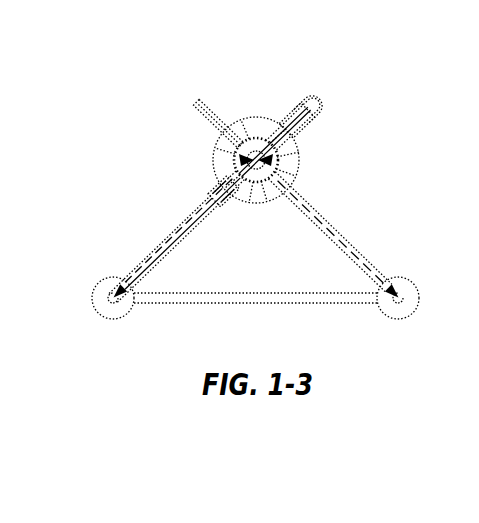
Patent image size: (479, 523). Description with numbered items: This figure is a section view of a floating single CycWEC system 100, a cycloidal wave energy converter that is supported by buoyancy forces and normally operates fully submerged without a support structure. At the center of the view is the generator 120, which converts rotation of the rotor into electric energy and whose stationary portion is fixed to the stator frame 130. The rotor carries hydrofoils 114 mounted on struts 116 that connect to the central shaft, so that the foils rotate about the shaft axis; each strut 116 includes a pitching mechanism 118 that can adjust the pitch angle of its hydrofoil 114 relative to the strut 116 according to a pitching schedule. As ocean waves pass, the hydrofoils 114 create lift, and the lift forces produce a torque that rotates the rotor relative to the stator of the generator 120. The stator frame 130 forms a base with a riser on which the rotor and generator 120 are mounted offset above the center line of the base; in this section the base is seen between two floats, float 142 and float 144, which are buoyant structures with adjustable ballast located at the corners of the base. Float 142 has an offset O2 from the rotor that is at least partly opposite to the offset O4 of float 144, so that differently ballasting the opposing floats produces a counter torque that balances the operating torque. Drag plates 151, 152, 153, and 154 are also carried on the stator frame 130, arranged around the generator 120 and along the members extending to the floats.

The CycWEC system 100 is at (178, 35).
The hydrofoil 114 is at (293, 90).
The strut 116 is at (265, 133).
The pitching mechanism 118 is at (273, 103).
The generator 120 is at (300, 163).
The stator frame 130 is at (318, 301).
The float 142 is at (402, 277).
The float 144 is at (112, 277).
The drag plate 151 is at (290, 196).
The drag plate 152 is at (303, 120).
The drag plate 153 is at (202, 115).
The drag plate 154 is at (208, 203).
The offset O2 is at (357, 251).
The offset O4 is at (155, 256).